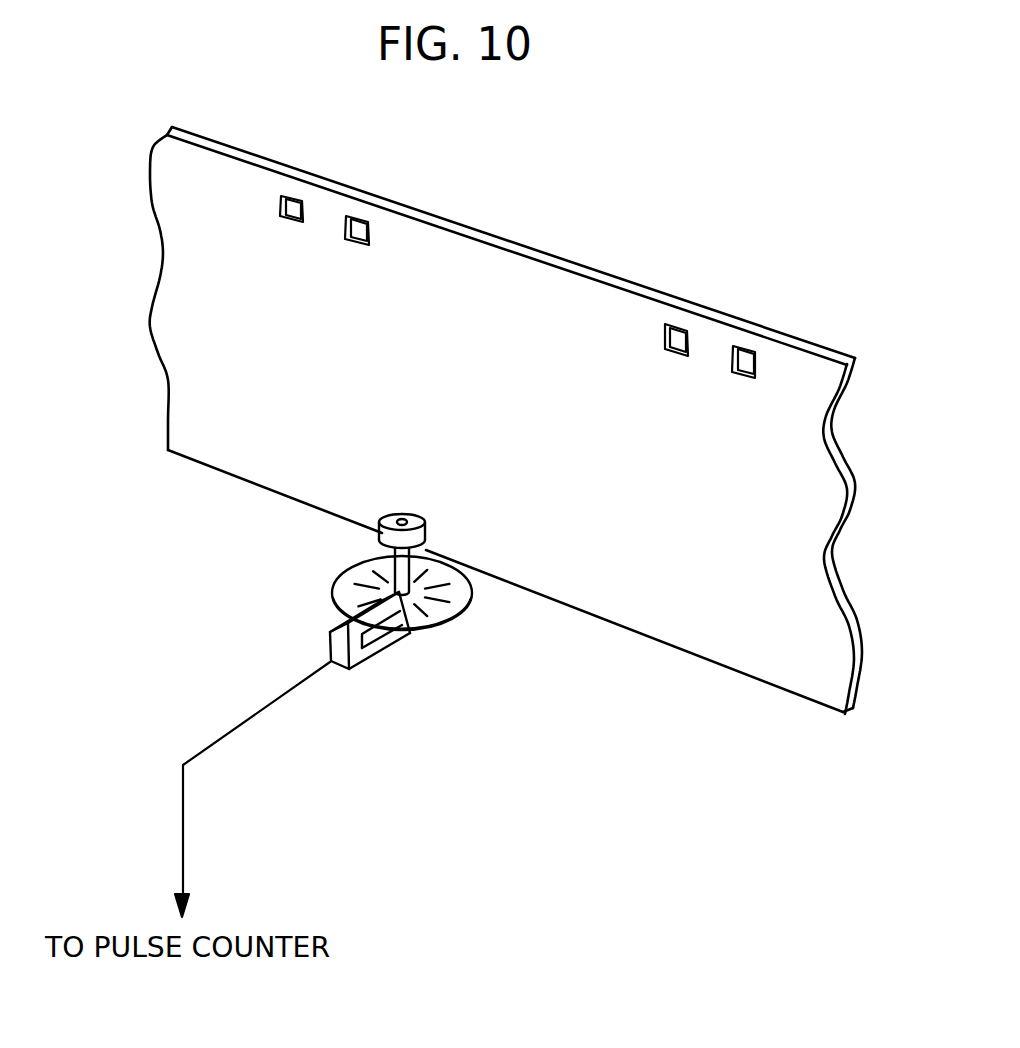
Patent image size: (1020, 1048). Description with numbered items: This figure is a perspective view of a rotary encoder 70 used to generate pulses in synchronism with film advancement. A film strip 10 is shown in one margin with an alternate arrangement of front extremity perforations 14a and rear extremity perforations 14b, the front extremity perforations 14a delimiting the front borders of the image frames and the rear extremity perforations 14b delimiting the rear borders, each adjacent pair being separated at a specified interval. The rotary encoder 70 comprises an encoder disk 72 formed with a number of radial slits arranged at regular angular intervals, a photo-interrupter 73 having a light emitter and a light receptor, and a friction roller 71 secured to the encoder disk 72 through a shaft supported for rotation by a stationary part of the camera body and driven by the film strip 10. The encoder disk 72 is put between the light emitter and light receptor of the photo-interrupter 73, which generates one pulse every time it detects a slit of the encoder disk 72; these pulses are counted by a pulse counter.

The film strip 10 is at (568, 283).
The front extremity perforations 14a is at (301, 198).
The rear extremity perforations 14b is at (368, 220).
The rotary encoder 70 is at (392, 631).
The friction roller 71 is at (378, 542).
The encoder disk 72 is at (470, 608).
The photo-interrupter 73 is at (337, 625).